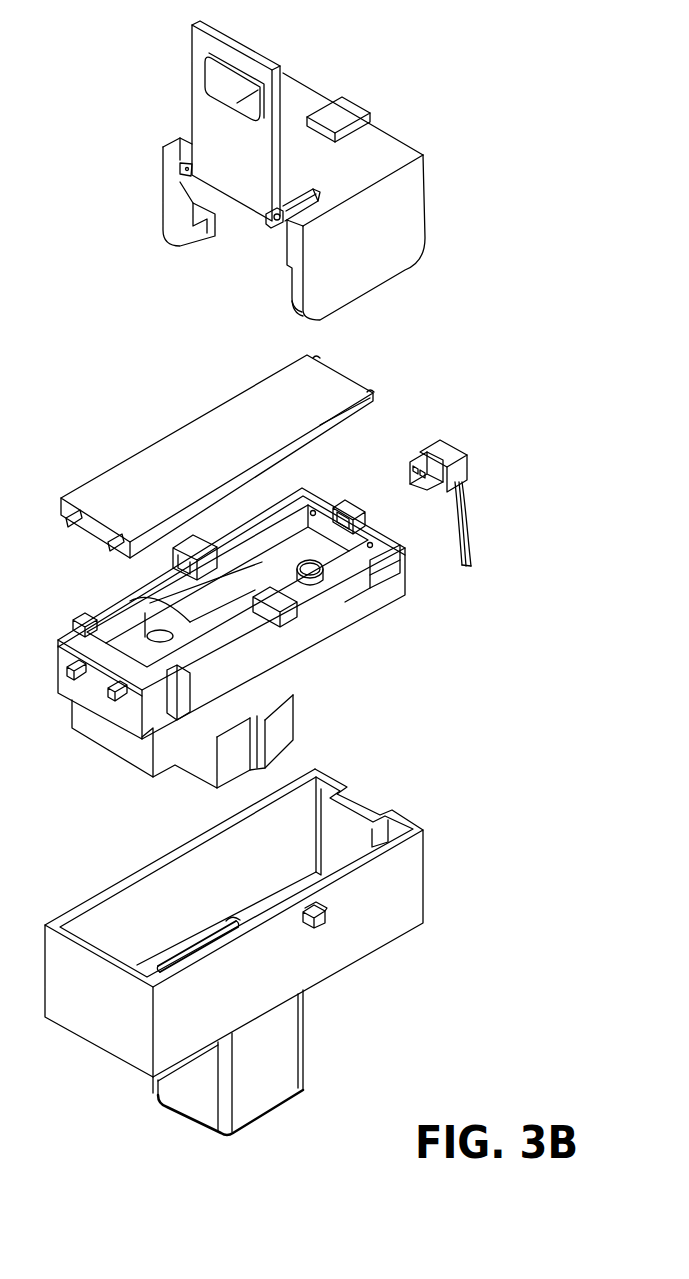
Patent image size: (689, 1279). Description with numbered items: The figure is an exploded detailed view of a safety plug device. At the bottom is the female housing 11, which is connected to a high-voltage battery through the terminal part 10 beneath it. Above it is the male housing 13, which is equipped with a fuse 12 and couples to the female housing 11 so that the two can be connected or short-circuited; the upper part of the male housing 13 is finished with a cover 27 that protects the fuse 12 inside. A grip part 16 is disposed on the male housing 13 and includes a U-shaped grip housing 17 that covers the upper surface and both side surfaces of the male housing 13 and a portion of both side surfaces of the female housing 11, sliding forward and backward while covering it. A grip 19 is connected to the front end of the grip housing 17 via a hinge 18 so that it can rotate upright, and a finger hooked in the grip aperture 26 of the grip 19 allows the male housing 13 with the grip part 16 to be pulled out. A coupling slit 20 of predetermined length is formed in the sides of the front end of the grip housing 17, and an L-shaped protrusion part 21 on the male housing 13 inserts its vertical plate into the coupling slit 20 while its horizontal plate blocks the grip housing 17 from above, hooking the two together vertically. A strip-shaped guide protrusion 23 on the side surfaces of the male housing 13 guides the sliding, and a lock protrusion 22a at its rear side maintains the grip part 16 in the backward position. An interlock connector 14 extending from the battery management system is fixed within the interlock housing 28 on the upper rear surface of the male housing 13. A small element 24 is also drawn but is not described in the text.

The terminal part 10 is at (285, 1047).
The female housing 11 is at (403, 887).
The fuse 12 is at (190, 622).
The male housing 13 is at (357, 638).
The interlock connector 14 is at (442, 455).
The grip part 16 is at (312, 80).
The grip housing 17 is at (408, 217).
The hinge 18 is at (280, 224).
The grip 19 is at (208, 128).
The coupling slit 20 is at (305, 197).
The protrusion part 21 is at (288, 610).
The lock protrusion 22a is at (365, 585).
The guide protrusion 23 is at (203, 705).
The cube 24 is at (323, 922).
The grip aperture 26 is at (217, 75).
The cover 27 is at (217, 418).
The interlock housing 28 is at (348, 503).